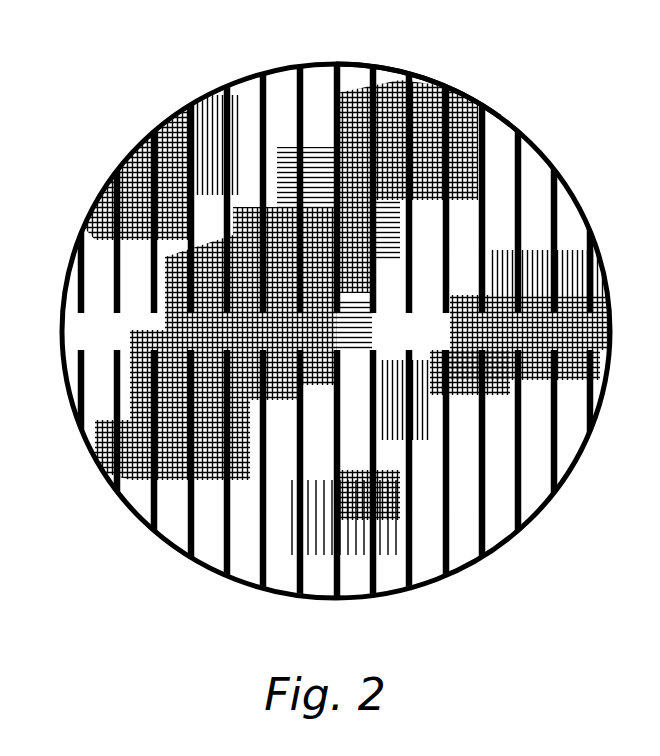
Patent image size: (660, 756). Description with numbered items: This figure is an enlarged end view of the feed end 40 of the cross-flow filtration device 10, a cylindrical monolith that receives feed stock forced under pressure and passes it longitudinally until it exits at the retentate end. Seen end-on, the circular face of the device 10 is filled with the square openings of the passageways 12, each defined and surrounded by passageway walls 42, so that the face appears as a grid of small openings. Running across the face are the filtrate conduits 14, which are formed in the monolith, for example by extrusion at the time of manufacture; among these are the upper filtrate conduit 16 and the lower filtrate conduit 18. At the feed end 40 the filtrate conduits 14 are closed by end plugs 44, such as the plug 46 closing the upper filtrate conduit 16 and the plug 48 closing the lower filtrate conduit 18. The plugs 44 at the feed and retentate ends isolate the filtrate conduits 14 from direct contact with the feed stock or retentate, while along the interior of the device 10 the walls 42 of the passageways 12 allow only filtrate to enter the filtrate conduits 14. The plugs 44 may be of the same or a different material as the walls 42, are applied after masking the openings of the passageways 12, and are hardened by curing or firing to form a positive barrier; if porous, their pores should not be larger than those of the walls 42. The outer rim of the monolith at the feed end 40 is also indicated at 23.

The cross-flow filtration device 10 is at (172, 44).
The passageways 12 is at (603, 323).
The filtrate conduits 14 is at (525, 181).
The upper filtrate conduit 16 is at (322, 84).
The lower filtrate conduit 18 is at (352, 584).
The rim edge 23 is at (474, 98).
The feed end 40 is at (122, 157).
The passageway walls 42 is at (575, 385).
The end plugs 44 is at (587, 252).
The plug 46 is at (342, 73).
The plug 48 is at (333, 578).